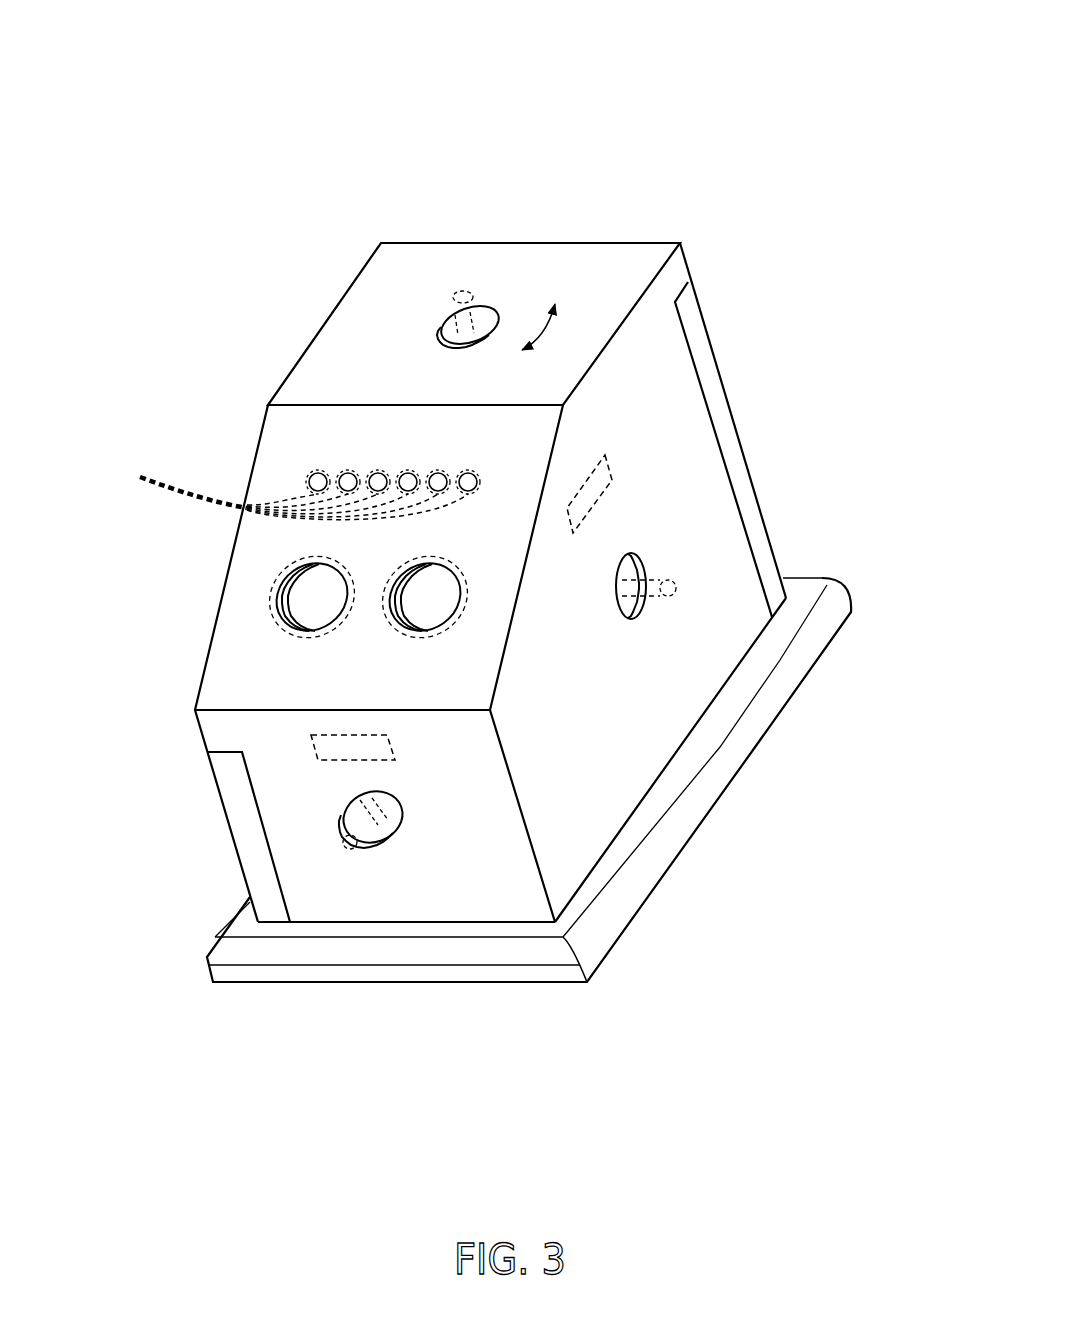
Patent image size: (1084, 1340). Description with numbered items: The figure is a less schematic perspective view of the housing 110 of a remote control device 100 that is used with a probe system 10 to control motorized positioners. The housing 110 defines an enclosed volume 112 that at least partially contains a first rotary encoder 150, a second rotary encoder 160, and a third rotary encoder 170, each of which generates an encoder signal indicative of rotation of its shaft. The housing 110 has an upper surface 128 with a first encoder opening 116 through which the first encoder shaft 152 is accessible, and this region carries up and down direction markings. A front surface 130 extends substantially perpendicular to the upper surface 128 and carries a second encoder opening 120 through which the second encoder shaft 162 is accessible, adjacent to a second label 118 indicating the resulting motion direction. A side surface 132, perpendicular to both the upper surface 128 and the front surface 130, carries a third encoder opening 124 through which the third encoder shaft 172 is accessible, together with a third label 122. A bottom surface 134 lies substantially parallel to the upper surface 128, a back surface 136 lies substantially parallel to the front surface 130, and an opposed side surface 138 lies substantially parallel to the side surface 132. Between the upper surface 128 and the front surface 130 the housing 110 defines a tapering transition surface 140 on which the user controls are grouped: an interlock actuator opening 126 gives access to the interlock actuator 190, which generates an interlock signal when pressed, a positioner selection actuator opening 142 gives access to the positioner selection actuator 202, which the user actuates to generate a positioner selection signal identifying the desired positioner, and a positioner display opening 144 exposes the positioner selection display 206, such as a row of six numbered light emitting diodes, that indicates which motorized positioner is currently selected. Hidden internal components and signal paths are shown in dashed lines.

The probe system 10 is at (118, 50).
The remote control device 100 is at (132, 90).
The housing 110 is at (724, 363).
The enclosed volume 112 is at (643, 663).
The first encoder opening 116 is at (488, 318).
The second label 118 is at (602, 500).
The second encoder opening 120 is at (636, 568).
The third label 122 is at (390, 848).
The third encoder opening 124 is at (404, 747).
The interlock actuator opening 126 is at (312, 606).
The upper surface 128 is at (383, 311).
The front surface 130 is at (413, 903).
The side surface 132 is at (660, 718).
The bottom surface 134 is at (318, 982).
The back surface 136 is at (700, 304).
The opposed side surface 138 is at (247, 474).
The transition surface 140 is at (280, 432).
The positioner selection actuator opening 142 is at (416, 600).
The positioner display opening 144 is at (373, 418).
The first rotary encoder 150 is at (456, 298).
The first encoder shaft 152 is at (405, 322).
The second rotary encoder 160 is at (610, 627).
The second encoder shaft 162 is at (668, 598).
The third rotary encoder 170 is at (355, 840).
The third encoder shaft 172 is at (343, 840).
The interlock actuator 190 is at (270, 585).
The positioner selection actuator 202 is at (463, 617).
The positioner selection display 206 is at (284, 488).